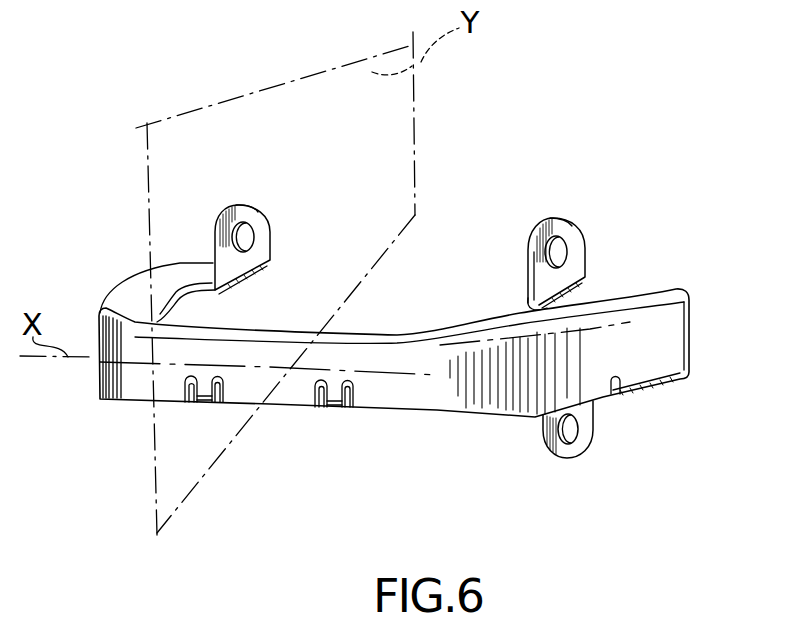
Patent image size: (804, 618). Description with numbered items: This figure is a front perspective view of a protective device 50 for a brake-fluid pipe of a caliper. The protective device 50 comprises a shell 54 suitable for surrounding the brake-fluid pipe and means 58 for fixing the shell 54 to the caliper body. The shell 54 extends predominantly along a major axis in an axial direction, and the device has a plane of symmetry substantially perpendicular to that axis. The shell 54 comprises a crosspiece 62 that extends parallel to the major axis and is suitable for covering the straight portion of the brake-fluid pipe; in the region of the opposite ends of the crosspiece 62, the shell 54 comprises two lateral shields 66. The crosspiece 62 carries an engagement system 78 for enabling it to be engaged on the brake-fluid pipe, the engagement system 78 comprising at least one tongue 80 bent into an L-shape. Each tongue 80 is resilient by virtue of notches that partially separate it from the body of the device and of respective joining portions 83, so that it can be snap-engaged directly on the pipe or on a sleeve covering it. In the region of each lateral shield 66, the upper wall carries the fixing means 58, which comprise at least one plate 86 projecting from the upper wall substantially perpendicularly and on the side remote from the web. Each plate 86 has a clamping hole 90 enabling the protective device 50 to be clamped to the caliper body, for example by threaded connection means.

The protective device 50 is at (121, 409).
The shell 54 is at (132, 345).
The fixing means 58 is at (243, 232).
The crosspiece 62 is at (427, 395).
The lateral shields 66 is at (650, 346).
The engagement system 78 is at (202, 399).
The tongue 80 is at (326, 405).
The joining portions 83 is at (352, 388).
The plate 86 is at (527, 267).
The clamping hole 90 is at (252, 205).